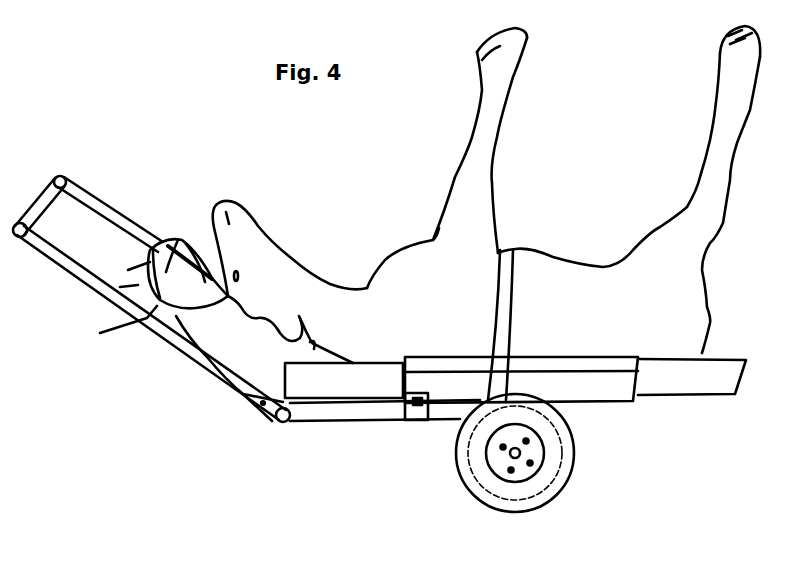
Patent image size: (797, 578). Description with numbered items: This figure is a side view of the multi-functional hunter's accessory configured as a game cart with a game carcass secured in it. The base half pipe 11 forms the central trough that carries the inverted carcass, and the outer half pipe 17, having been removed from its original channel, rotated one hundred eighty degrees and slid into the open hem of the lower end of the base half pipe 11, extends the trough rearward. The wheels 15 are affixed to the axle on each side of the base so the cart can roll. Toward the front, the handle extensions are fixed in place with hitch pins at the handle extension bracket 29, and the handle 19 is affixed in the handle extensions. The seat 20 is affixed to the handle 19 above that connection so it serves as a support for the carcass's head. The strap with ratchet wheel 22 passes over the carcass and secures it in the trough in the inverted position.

The base half pipe 11 is at (602, 403).
The wheels 15 is at (510, 512).
The outer half pipe 17 is at (706, 397).
The handle 19 is at (66, 271).
The seat 20 is at (217, 378).
The strap with ratchet wheel 22 is at (502, 287).
The handle extension bracket 29 is at (414, 421).